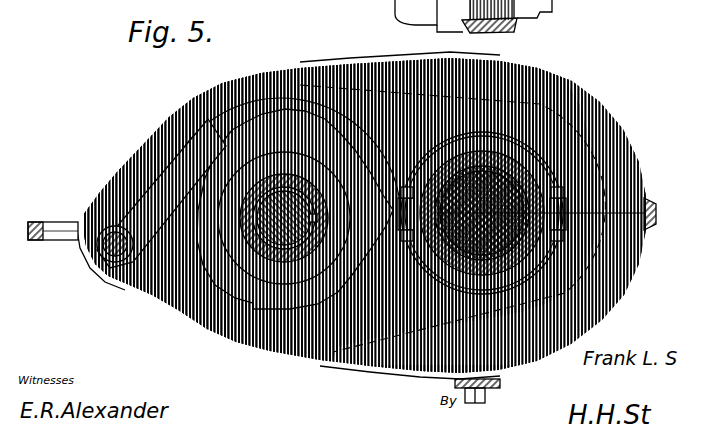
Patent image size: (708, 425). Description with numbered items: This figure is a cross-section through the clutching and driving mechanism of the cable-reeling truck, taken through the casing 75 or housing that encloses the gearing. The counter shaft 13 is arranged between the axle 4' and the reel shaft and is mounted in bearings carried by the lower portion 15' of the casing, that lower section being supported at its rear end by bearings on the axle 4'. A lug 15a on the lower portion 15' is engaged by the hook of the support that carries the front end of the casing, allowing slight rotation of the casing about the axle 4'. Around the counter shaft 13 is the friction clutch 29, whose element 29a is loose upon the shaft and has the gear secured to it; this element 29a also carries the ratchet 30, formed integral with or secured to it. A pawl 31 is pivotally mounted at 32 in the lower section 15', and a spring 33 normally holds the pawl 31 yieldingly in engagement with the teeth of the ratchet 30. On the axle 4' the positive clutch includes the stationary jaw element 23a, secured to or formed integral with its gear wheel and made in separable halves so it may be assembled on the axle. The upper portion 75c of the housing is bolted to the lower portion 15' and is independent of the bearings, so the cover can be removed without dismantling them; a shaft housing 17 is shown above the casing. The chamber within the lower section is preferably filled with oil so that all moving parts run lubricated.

The counter shaft 13 is at (296, 232).
The lug 15a is at (43, 240).
The lower portion of casing 15' is at (410, 385).
The casing top wall 75c is at (338, 70).
The shaft housing 17 is at (548, 13).
The stationary jaw element 23a is at (520, 172).
The friction clutch 29 is at (270, 100).
The friction clutch element 29a is at (390, 212).
The ratchet 30 is at (239, 130).
The pawl 31 is at (161, 193).
The pawl pivot 32 is at (101, 269).
The spring 33 is at (146, 204).
The axle 4' is at (452, 218).
The casing 75 is at (377, 215).